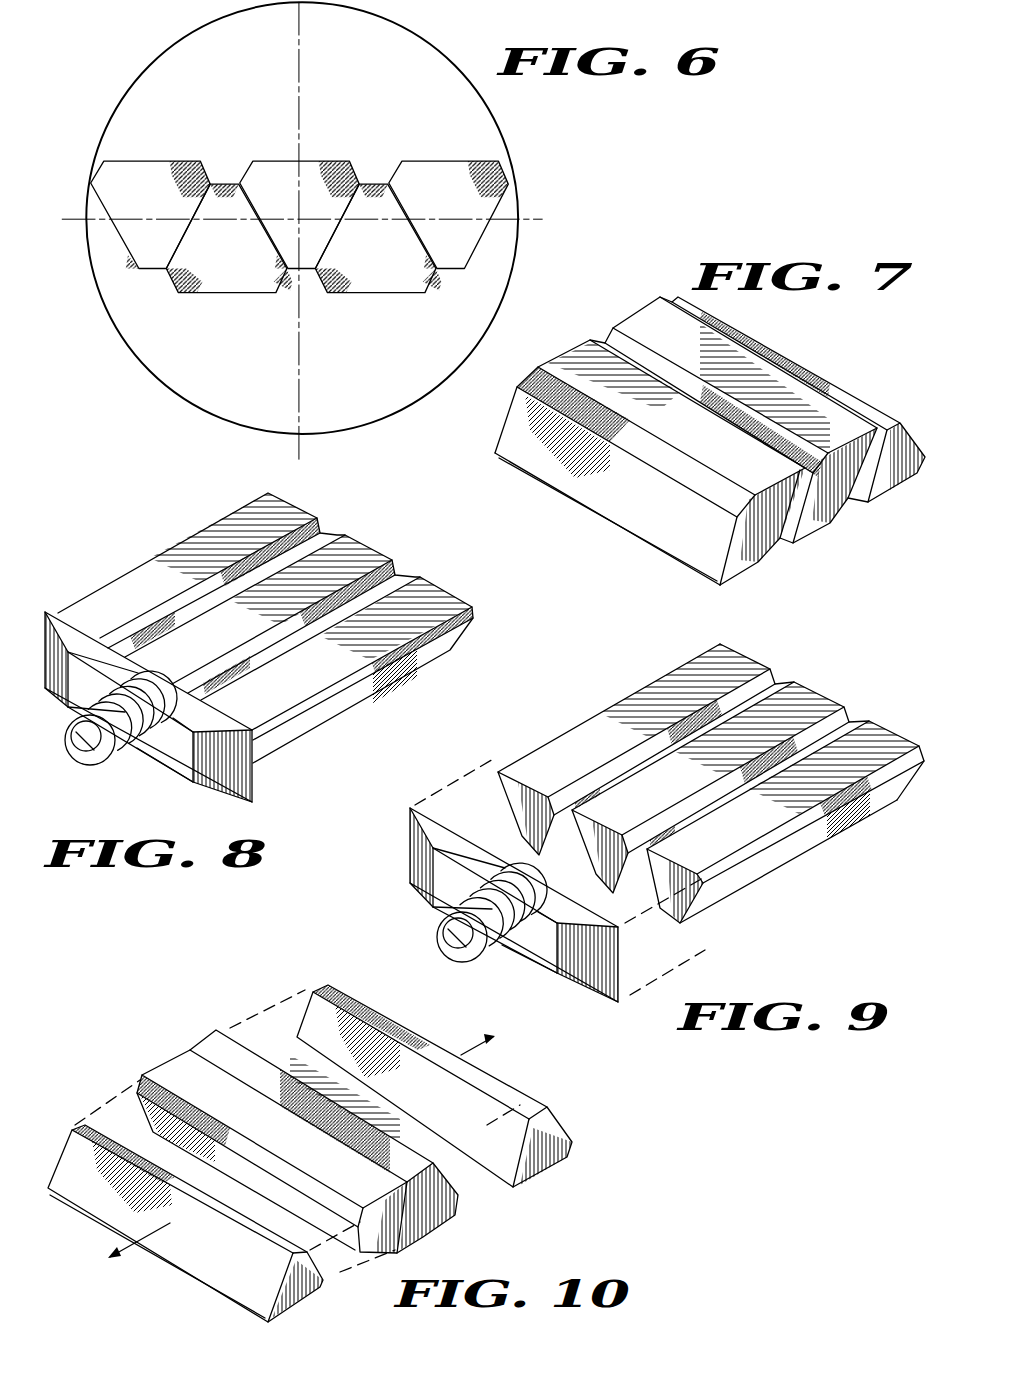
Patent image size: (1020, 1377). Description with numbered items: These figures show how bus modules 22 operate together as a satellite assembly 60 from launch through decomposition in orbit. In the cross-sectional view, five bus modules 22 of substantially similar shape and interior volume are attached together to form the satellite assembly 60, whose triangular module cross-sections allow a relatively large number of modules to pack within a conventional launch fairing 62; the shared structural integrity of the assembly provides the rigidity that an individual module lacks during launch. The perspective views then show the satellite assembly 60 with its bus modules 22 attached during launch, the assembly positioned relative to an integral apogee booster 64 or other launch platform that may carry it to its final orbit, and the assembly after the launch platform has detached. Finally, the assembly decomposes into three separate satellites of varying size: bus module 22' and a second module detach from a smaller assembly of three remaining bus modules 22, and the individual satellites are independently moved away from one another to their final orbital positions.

In FIG. 6, the bus module 22 is at (300, 227).
In FIG. 10, the bus module 22' is at (185, 1202).
In FIG. 6, the satellite assembly 60 is at (302, 147).
In FIG. 7, the satellite assembly 60 is at (796, 358).
In FIG. 8, the satellite assembly 60 is at (445, 586).
In FIG. 9, the satellite assembly 60 is at (827, 692).
In FIG. 10, the satellite assembly 60 is at (218, 1028).
In FIG. 6, the launch fairing 62 is at (122, 322).
In FIG. 8, the integral apogee booster 64 is at (253, 770).
In FIG. 9, the integral apogee booster 64 is at (622, 942).